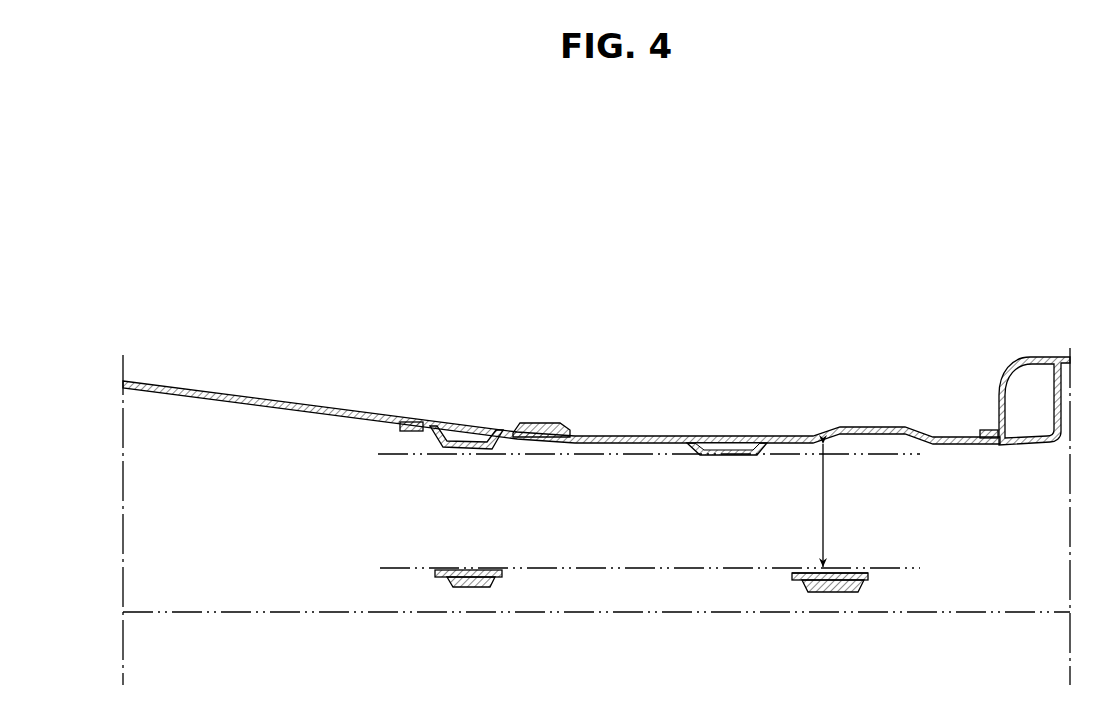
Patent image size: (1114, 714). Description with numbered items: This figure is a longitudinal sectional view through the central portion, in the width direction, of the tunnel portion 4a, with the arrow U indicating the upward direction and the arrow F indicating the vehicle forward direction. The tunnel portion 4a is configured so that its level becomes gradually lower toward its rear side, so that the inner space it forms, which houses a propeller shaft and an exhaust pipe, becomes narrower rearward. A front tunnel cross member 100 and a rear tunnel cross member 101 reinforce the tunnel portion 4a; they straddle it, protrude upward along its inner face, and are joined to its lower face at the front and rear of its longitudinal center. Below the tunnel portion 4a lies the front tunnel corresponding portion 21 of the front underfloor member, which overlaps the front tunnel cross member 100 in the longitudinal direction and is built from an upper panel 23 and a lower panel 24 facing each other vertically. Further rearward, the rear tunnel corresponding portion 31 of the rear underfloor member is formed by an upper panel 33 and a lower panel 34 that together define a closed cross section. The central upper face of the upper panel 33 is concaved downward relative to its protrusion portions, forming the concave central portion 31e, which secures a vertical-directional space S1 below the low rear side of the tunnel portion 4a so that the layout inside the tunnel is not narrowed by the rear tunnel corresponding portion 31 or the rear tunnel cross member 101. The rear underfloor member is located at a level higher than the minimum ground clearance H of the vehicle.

The tunnel portion 4a is at (664, 435).
The front tunnel cross member 100 is at (446, 449).
The rear tunnel cross member 101 is at (722, 455).
The front tunnel corresponding portion 21 is at (460, 594).
The upper panel 23 is at (442, 570).
The lower panel 24 is at (453, 585).
The rear tunnel corresponding portion 31 is at (818, 591).
The upper panel 33 is at (803, 573).
The lower panel 34 is at (810, 589).
The concave central portion 31e is at (840, 567).
The vertical-directional space S1 is at (826, 502).
The minimum ground clearance H is at (690, 612).
The upward direction U is at (608, 302).
The forward direction F is at (105, 487).